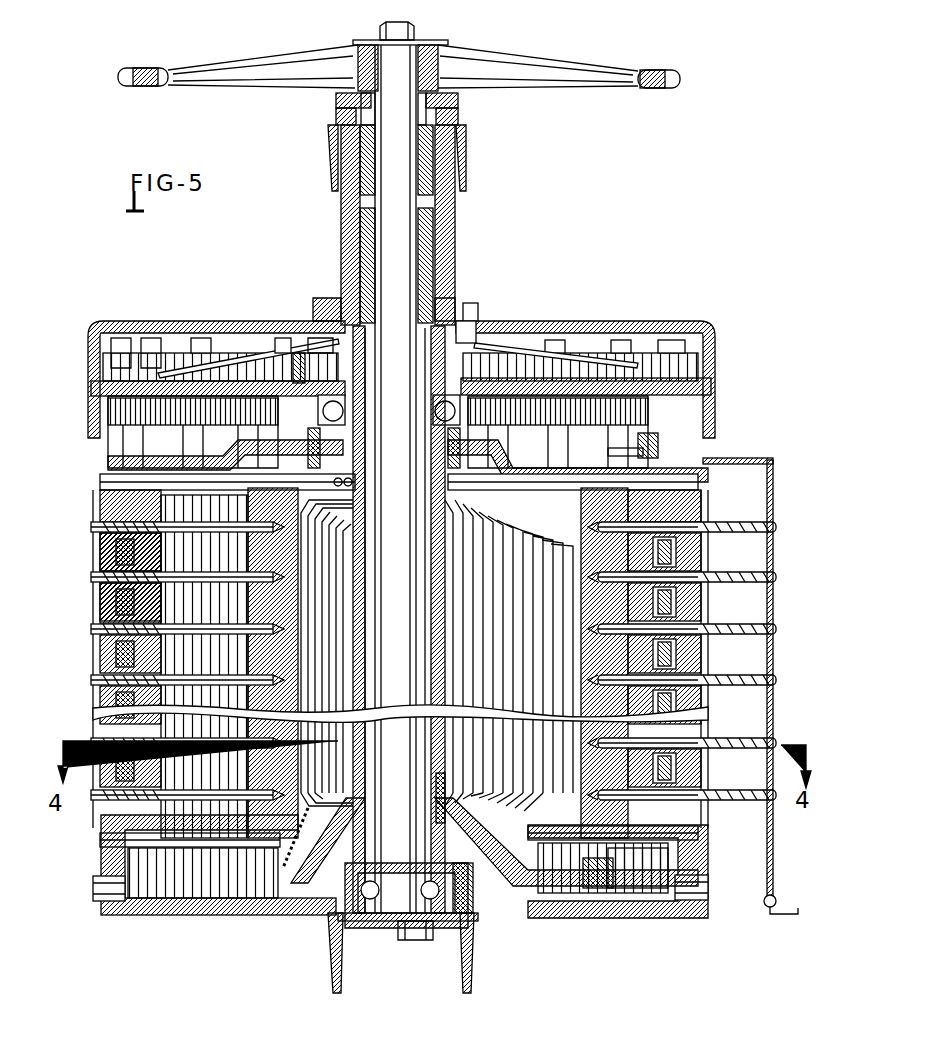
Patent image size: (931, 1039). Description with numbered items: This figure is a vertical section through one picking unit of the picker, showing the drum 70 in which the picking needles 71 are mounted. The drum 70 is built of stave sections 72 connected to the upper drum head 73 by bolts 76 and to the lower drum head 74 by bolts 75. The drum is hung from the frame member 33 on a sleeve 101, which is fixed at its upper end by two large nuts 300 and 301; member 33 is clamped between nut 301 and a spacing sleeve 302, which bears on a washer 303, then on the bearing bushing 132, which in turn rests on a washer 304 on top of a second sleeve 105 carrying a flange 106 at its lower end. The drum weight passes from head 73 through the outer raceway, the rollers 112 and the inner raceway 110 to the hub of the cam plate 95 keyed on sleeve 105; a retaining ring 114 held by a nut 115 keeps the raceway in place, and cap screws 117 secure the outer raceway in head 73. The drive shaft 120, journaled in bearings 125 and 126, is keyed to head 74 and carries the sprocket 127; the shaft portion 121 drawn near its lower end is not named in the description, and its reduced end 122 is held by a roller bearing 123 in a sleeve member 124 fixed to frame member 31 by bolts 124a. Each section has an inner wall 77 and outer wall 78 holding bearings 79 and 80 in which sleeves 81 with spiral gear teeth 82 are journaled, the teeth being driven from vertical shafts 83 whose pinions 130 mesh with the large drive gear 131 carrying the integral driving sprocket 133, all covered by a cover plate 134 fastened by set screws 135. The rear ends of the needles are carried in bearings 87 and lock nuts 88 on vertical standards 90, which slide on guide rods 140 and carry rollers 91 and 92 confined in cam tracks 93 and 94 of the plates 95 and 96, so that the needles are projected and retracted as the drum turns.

The nut 300 is at (330, 93).
The nut 301 is at (330, 108).
The spacing sleeve 302 is at (338, 203).
The washer 303 is at (336, 228).
The sprocket 127 is at (573, 65).
The bearing 125 is at (448, 100).
The frame member 33 is at (450, 142).
The sleeve 101 is at (440, 228).
The bearing bushing 132 is at (333, 290).
The cover plate 134 is at (130, 327).
The bolt 76 is at (163, 367).
The set screw 135 is at (172, 322).
The upper drum head 73 is at (233, 383).
The roller 112 is at (282, 372).
The inner raceway 110 is at (317, 350).
The nut 115 is at (442, 290).
The driving sprocket 133 is at (470, 290).
The retaining ring 114 is at (457, 340).
The drive gear 131 is at (552, 320).
The washer 304 is at (362, 318).
The sleeve 105 is at (430, 404).
The cam plate 95 is at (460, 453).
The cap screw 117 is at (333, 440).
The pinion 130 is at (82, 345).
The cam track 93 is at (650, 440).
The roller 91 is at (650, 445).
The guide rod 140 is at (95, 474).
The standard 90 is at (467, 628).
The flange 106 is at (330, 490).
The bearing 80 is at (90, 514).
The bearing 79 is at (92, 545).
The sleeve 81 is at (92, 572).
The inner wall 77 is at (92, 605).
The outer wall 78 is at (92, 650).
The spiral gear teeth 82 is at (105, 710).
The vertical shaft 83 is at (92, 760).
The picking needle 71 is at (752, 632).
The stave section 72 is at (86, 852).
The lower drum head 74 is at (212, 903).
The bolt 75 is at (85, 882).
The bearing 87 is at (268, 830).
The lock nut 88 is at (277, 810).
The cam plate 96 is at (537, 870).
The cam track 94 is at (630, 880).
The roller 92 is at (613, 877).
The drum 70 is at (655, 907).
The bearing 126 is at (421, 781).
The shaft end 121 is at (390, 793).
The reduced end 122 is at (360, 920).
The drive shaft 120 is at (425, 905).
The roller bearing 123 is at (462, 903).
The bolt 124a is at (402, 933).
The sleeve member 124 is at (323, 937).
The frame member 31 is at (463, 947).